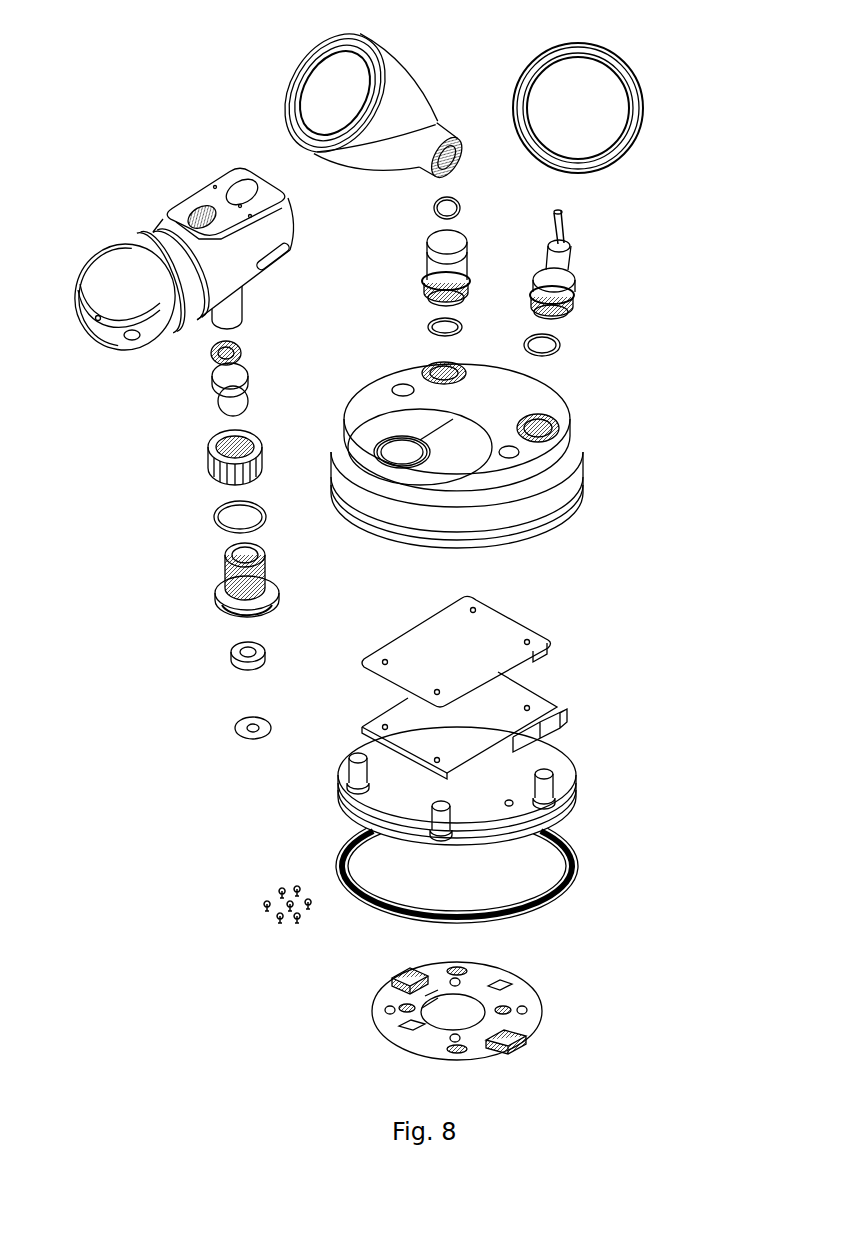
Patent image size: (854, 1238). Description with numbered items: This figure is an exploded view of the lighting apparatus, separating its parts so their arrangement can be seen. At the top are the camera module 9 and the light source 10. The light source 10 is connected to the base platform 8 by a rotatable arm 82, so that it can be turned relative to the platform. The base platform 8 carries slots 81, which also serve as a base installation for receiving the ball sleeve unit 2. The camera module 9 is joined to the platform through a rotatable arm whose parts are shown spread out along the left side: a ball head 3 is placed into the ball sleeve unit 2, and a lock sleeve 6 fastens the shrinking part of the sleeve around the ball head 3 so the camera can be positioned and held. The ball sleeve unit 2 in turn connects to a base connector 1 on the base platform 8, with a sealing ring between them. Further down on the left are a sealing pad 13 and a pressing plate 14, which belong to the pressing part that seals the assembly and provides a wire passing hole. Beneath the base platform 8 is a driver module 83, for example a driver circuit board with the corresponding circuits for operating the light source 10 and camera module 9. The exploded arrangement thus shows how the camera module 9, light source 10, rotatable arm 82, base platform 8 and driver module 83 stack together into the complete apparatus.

The base connector 1 is at (218, 605).
The ball sleeve unit 2 is at (227, 557).
The ball head 3 is at (230, 405).
The lock sleeve 6 is at (217, 470).
The base platform 8 is at (500, 436).
The camera module 9 is at (170, 230).
The light source 10 is at (605, 110).
The sealing pad 13 is at (235, 667).
The pressing plate 14 is at (240, 737).
The slots 81 is at (403, 457).
The rotatable arm 82 is at (557, 295).
The driver module 83 is at (473, 663).